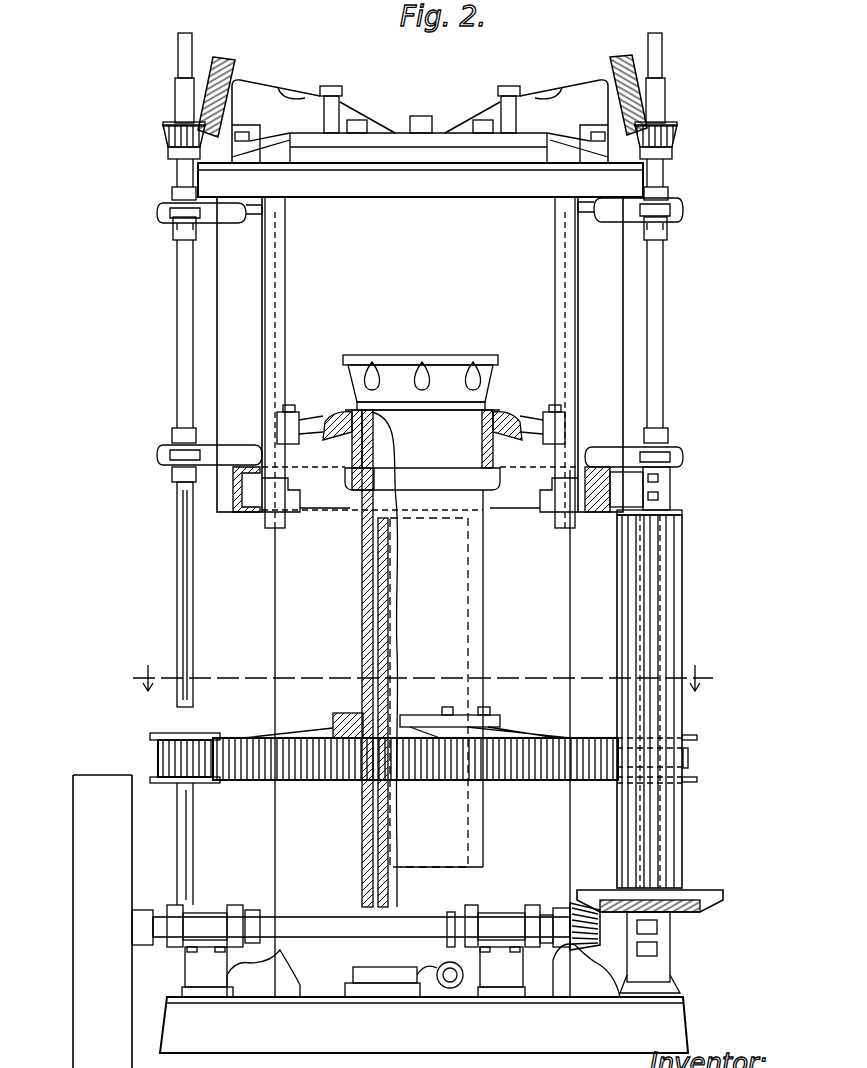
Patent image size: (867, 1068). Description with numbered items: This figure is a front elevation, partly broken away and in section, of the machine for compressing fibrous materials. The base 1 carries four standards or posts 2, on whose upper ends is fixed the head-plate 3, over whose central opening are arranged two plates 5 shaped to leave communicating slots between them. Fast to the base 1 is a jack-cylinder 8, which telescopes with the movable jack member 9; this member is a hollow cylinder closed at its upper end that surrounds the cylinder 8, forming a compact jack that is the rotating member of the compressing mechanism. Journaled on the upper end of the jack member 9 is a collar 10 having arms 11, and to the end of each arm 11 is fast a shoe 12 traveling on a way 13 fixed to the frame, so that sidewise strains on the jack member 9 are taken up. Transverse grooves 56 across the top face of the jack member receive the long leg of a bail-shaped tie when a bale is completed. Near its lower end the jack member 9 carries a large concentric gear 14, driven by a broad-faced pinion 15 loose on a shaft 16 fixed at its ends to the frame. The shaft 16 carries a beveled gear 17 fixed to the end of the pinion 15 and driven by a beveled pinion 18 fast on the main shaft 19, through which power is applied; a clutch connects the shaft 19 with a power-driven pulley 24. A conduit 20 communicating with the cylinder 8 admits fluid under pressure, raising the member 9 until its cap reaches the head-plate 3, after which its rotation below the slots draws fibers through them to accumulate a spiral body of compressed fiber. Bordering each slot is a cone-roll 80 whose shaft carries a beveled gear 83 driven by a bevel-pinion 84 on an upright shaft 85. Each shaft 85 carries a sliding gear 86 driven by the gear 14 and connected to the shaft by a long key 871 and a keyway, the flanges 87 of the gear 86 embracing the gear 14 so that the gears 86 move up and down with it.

The base 1 is at (424, 998).
The standards or posts 2 is at (420, 597).
The head-plate 3 is at (420, 165).
The plates 5 is at (481, 148).
The jack-cylinder 8 is at (429, 710).
The movable jack member 9 is at (394, 658).
The collar 10 is at (482, 440).
The arms 11 is at (320, 428).
The shoe 12 is at (290, 410).
The way 13 is at (285, 335).
The concentric gear 14 is at (292, 738).
The broad-faced pinion 15 is at (683, 845).
The shaft 16 is at (660, 462).
The beveled gear 17 is at (720, 897).
The beveled pinion 18 is at (573, 905).
The main shaft 19 is at (306, 918).
The conduit 20 is at (450, 990).
The power-driven pulley 24 is at (102, 921).
The transverse grooves or openings 56 is at (422, 372).
The cone-roll 80 is at (472, 127).
The beveled gear 83 is at (262, 52).
The bevel-pinion 84 is at (163, 137).
The upright shaft 85 is at (178, 265).
The sliding gear 86 is at (170, 759).
The flanges 87 is at (152, 735).
The long key 871 is at (183, 636).